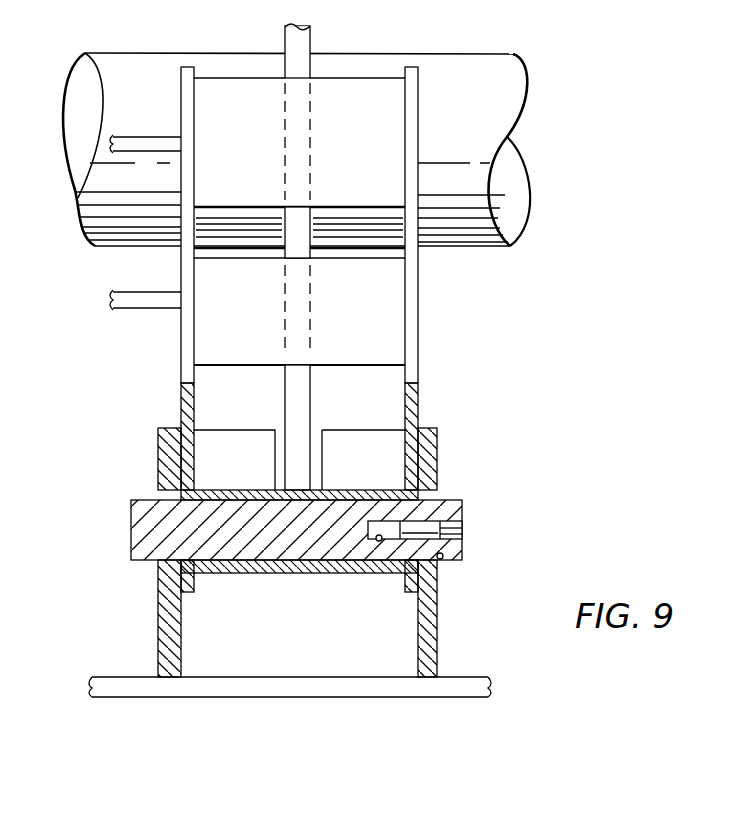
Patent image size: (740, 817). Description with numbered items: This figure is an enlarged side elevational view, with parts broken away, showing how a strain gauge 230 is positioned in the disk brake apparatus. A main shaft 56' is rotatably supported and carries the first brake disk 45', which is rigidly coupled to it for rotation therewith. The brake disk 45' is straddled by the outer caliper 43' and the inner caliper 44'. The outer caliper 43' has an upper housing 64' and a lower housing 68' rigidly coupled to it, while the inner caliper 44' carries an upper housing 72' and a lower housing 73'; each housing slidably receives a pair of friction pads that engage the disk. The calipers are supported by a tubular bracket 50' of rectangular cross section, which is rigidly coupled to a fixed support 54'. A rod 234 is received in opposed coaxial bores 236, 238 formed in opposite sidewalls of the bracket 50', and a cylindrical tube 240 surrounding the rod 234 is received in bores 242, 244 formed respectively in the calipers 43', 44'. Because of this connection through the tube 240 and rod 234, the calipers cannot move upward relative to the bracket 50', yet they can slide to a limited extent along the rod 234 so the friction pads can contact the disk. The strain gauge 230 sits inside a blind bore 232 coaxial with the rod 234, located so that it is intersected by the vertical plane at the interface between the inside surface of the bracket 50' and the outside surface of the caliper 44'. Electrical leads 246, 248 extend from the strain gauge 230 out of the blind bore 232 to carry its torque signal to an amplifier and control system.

The outer caliper 43' is at (217, 315).
The inner caliper 44' is at (420, 317).
The first brake disk 45' is at (326, 245).
The main shaft 56' is at (306, 130).
The upper housing 64' is at (203, 101).
The upper housing 72' is at (394, 98).
The lower housing 68' is at (270, 274).
The lower housing 73' is at (336, 322).
The bracket 50' is at (330, 542).
The rod 234 is at (136, 499).
The bore 238 is at (165, 508).
The bore 242 is at (192, 496).
The bore 244 is at (405, 496).
The strain gauge 230 is at (421, 534).
The electrical lead 246 is at (463, 527).
The electrical lead 248 is at (463, 534).
The blind bore 232 is at (381, 541).
The bore 236 is at (443, 559).
The cylindrical tube 240 is at (305, 576).
The fixed support 54' is at (318, 662).